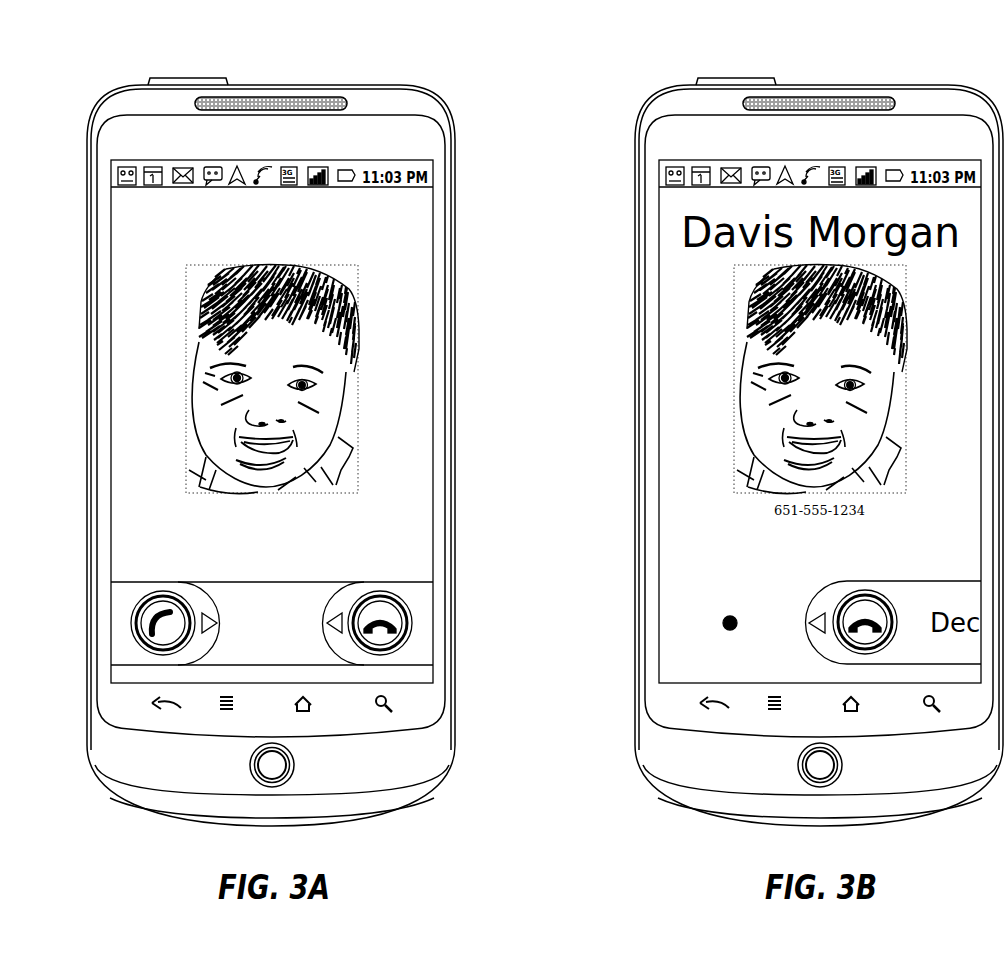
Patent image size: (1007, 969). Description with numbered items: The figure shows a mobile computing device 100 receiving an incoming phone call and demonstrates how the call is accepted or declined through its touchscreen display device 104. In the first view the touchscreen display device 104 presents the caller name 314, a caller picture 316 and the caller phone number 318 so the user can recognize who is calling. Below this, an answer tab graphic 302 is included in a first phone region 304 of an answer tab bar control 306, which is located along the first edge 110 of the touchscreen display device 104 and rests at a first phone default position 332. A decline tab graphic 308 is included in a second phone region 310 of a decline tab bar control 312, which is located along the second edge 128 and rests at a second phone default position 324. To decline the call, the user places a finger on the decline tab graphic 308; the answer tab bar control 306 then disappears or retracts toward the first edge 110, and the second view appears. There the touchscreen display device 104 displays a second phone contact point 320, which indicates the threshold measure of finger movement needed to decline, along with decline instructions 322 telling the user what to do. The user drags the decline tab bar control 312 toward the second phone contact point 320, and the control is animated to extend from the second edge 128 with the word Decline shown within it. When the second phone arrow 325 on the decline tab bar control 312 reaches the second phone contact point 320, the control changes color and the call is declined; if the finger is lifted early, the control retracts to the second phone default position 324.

In FIG. 3A, the mobile computing device 100 is at (100, 103).
In FIG. 3A, the touchscreen display device 104 is at (435, 223).
In FIG. 3A, the first edge 110 is at (111, 623).
In FIG. 3A, the second edge 128 is at (433, 623).
In FIG. 3A, the caller name 314 is at (174, 256).
In FIG. 3A, the caller picture 316 is at (358, 386).
In FIG. 3A, the caller phone number 318 is at (320, 508).
In FIG. 3A, the first phone default position 332 is at (160, 571).
In FIG. 3A, the answer tab graphic 302 is at (180, 600).
In FIG. 3A, the first phone region 304 is at (190, 636).
In FIG. 3A, the answer tab bar control 306 is at (223, 608).
In FIG. 3A, the second phone default position 324 is at (334, 576).
In FIG. 3A, the decline tab graphic 308 is at (380, 600).
In FIG. 3B, the decline tab graphic 308 is at (867, 603).
In FIG. 3A, the second phone region 310 is at (352, 636).
In FIG. 3A, the decline tab bar control 312 is at (325, 624).
In FIG. 3B, the decline tab bar control 312 is at (905, 581).
In FIG. 3B, the second phone contact point 320 is at (725, 617).
In FIG. 3B, the decline instructions 322 is at (768, 534).
In FIG. 3B, the second phone arrow 325 is at (812, 628).